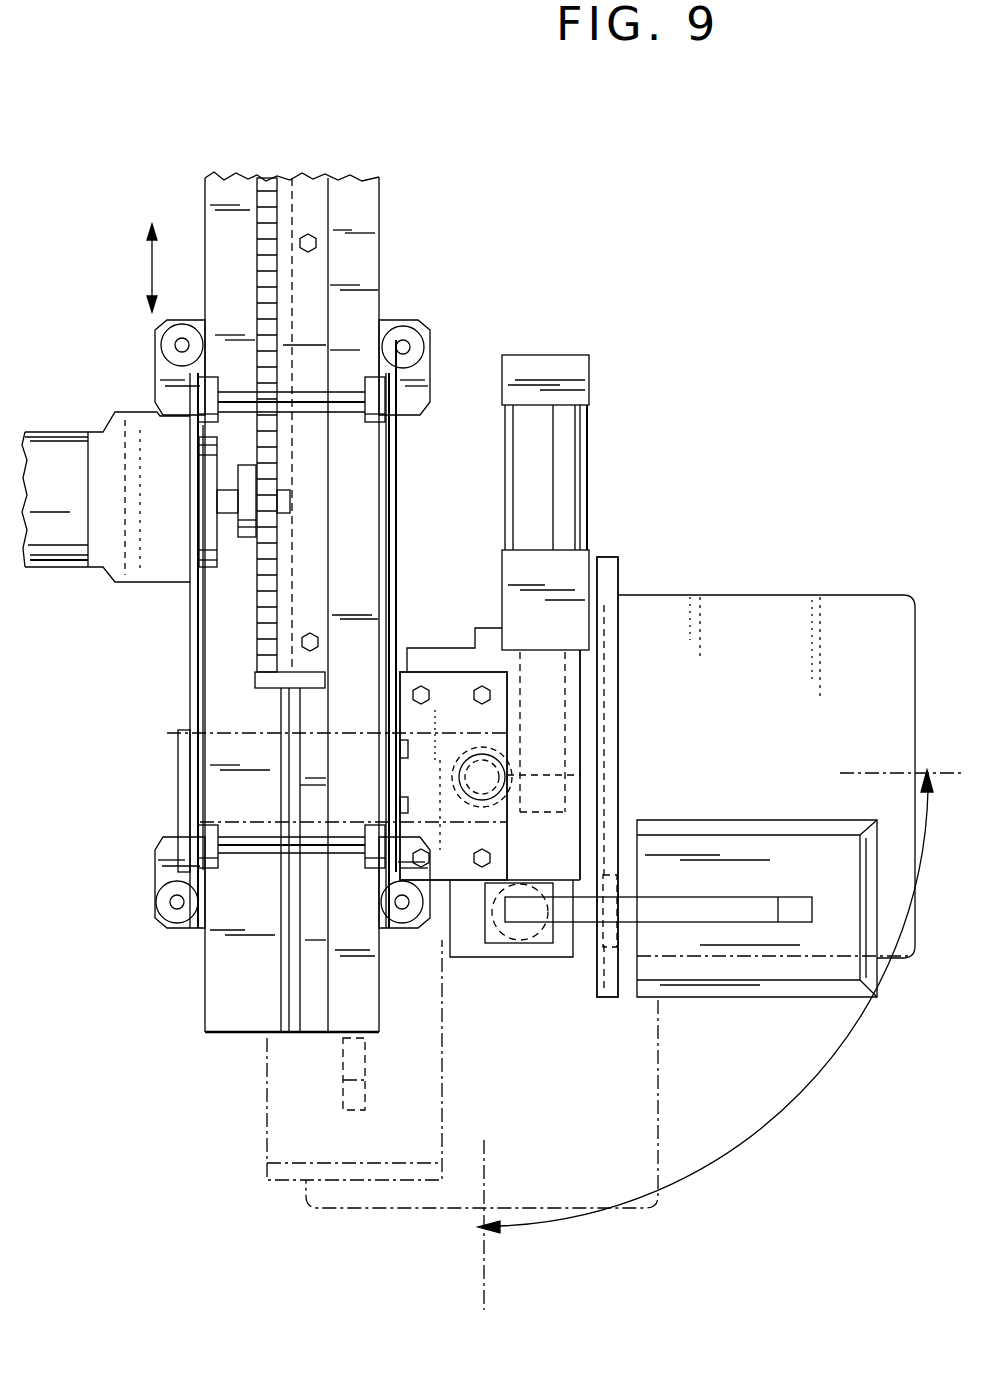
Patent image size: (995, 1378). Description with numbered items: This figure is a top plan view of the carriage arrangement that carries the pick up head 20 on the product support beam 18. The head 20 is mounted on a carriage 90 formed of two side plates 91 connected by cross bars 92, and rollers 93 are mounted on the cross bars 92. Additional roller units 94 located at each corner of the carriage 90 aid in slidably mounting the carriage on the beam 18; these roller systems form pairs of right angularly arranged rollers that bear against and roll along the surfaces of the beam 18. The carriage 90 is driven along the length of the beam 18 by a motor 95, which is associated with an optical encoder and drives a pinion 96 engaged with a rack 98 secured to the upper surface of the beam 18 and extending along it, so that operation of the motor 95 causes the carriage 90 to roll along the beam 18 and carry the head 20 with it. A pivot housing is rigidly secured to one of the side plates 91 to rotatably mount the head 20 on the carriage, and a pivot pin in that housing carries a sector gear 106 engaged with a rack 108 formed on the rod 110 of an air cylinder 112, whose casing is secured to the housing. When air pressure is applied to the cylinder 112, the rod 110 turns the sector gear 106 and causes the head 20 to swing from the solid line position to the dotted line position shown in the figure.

The product support beam 18 is at (372, 272).
The pick up head 20 is at (625, 505).
The carriage 90 is at (396, 575).
The side plates 91 is at (193, 655).
The cross bars 92 is at (345, 392).
The rollers 93 is at (208, 838).
The roller units 94 is at (160, 368).
The motor 95 is at (45, 432).
The pinion 96 is at (303, 462).
The rack 98 is at (272, 195).
The sector gear 106 is at (488, 802).
The rack 108 is at (543, 692).
The rod 110 is at (557, 670).
The air cylinder 112 is at (578, 440).